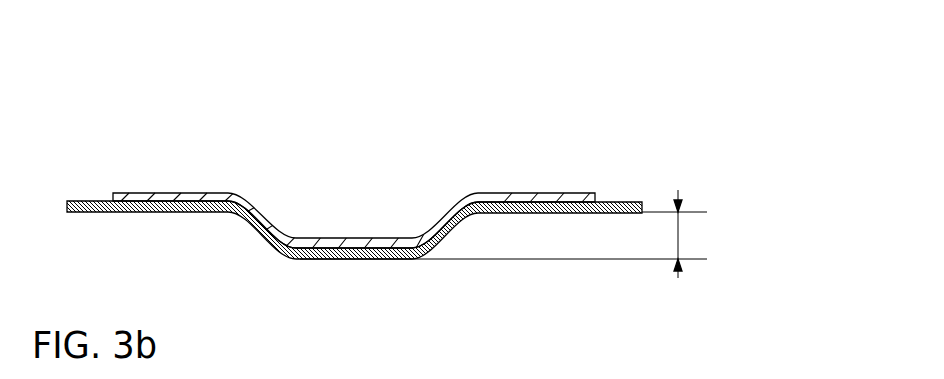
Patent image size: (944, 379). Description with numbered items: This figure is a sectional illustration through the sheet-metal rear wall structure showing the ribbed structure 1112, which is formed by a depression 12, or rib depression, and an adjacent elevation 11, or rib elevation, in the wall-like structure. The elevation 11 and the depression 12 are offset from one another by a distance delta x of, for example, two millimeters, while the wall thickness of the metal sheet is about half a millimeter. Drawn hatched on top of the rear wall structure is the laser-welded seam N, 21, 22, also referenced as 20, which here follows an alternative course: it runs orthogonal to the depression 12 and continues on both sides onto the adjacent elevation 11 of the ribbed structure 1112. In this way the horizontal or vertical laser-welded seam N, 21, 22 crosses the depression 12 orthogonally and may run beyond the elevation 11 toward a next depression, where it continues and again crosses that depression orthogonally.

The elevation 11 is at (593, 207).
The depression 12 is at (333, 253).
The ribbed structure 1112 is at (747, 220).
The layer 20 is at (354, 204).
The laser-welded seam N is at (354, 204).
The laser-welded seam 21 is at (354, 204).
The laser-welded seam 22 is at (348, 238).